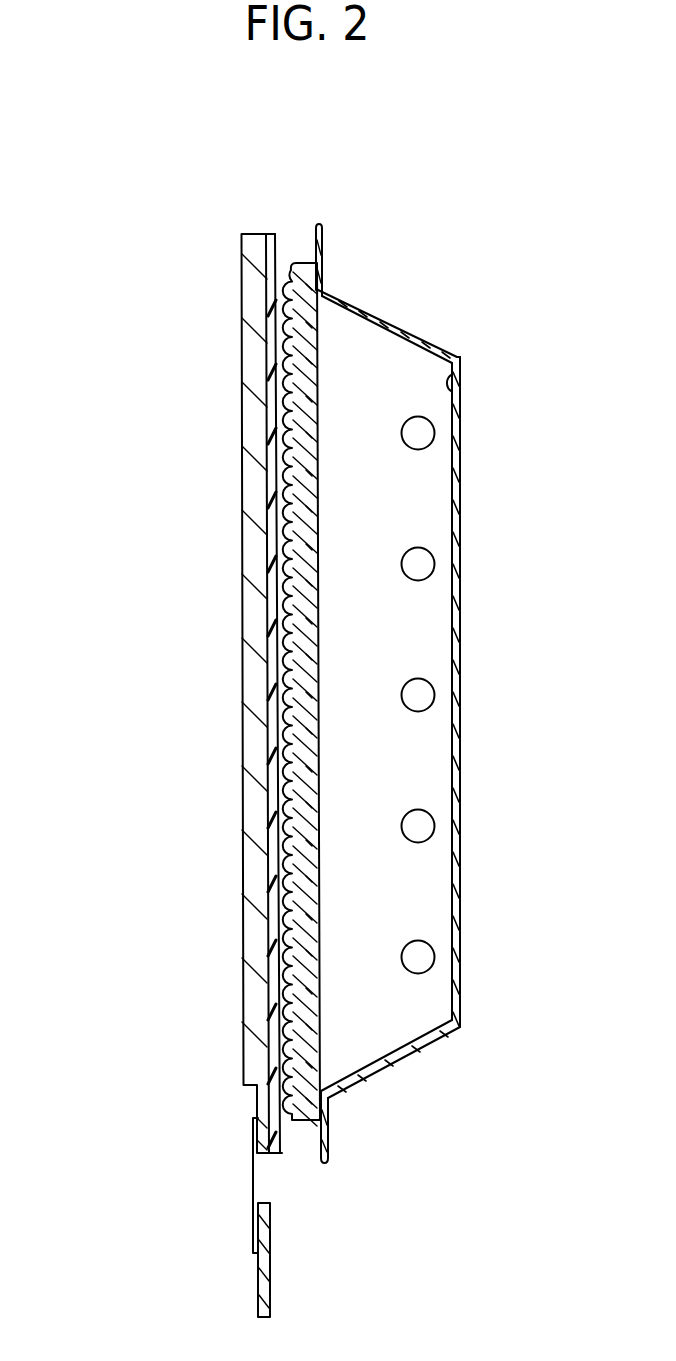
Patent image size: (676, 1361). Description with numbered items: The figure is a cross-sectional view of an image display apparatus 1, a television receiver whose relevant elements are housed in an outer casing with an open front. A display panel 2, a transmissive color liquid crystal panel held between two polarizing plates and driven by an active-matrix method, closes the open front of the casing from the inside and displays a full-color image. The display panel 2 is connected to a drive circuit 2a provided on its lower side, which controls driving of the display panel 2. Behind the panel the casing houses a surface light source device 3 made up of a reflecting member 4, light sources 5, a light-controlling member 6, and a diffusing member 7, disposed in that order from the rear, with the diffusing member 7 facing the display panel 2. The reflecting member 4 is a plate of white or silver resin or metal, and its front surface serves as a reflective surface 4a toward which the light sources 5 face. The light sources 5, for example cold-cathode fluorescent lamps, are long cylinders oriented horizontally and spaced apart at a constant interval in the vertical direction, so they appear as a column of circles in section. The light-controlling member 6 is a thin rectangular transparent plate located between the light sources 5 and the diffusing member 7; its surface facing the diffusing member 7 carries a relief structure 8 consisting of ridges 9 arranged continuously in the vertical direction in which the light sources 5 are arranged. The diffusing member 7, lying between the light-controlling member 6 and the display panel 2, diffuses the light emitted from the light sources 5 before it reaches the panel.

The image display apparatus 1 is at (146, 175).
The display panel 2 is at (243, 527).
The drive circuit 2a is at (262, 1278).
The surface light source device 3 is at (382, 313).
The reflecting member 4 is at (320, 224).
The reflective surface 4a is at (460, 372).
The light sources 5 is at (435, 437).
The light-controlling member 6 is at (303, 262).
The diffusing member 7 is at (271, 233).
The relief structure 8 is at (283, 686).
The ridges 9 is at (283, 312).